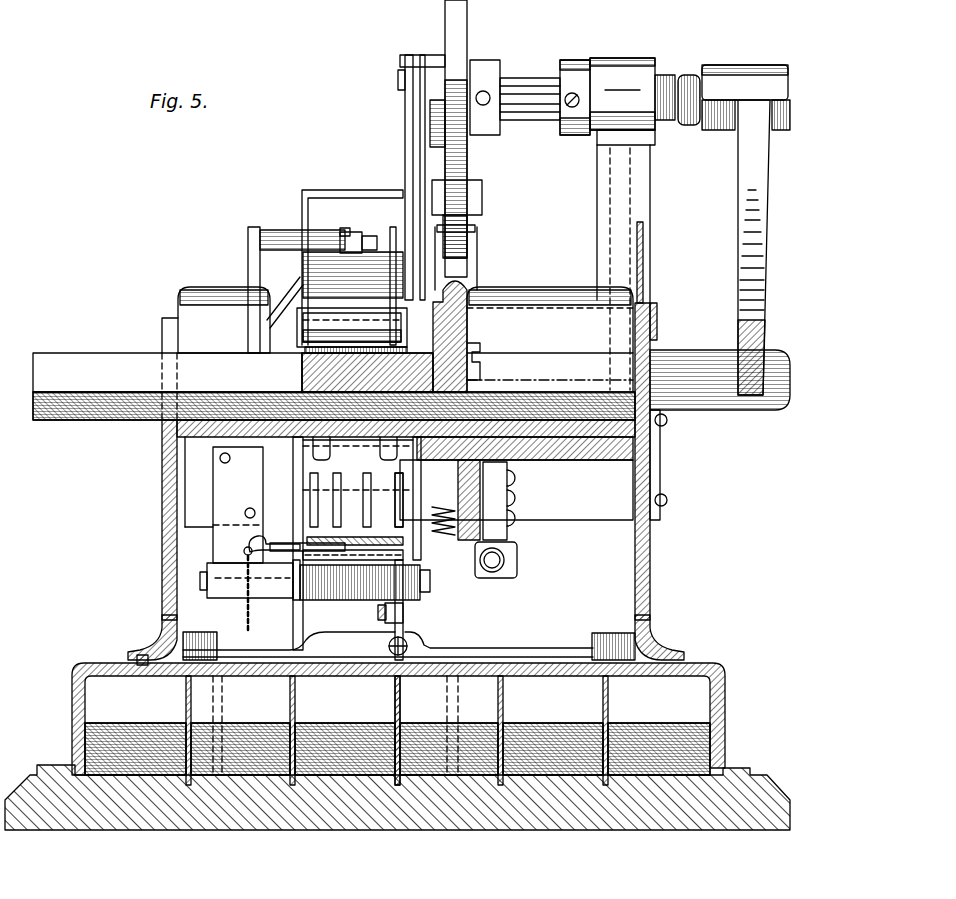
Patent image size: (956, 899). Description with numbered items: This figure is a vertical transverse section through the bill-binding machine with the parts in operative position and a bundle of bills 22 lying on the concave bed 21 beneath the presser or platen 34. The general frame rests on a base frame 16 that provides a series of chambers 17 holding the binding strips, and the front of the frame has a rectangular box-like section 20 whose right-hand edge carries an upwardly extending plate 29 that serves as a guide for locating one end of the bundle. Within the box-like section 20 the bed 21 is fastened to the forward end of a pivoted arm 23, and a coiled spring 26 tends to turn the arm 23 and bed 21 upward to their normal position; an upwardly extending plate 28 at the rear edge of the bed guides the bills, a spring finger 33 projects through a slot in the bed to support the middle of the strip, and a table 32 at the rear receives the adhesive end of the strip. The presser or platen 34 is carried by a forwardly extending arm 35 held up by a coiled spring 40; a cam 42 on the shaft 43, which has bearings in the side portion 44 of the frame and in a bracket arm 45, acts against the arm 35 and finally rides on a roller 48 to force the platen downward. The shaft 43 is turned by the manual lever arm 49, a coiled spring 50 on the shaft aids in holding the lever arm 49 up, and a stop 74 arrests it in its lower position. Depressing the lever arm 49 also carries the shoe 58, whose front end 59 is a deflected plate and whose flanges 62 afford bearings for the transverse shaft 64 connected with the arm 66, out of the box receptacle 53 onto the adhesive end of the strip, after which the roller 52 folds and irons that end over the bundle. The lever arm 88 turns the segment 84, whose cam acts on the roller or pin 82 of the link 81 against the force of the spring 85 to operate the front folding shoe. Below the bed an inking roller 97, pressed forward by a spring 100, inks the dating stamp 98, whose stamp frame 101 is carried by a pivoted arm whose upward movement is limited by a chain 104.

The base frame 16 is at (404, 708).
The chambers 17 is at (392, 730).
The box-like section 20 is at (635, 602).
The bed 21 is at (177, 453).
The bundle of bills 22 is at (133, 382).
The arm 23 is at (512, 500).
The coiled spring 26 is at (506, 562).
The plate 28 is at (215, 288).
The plate 29 is at (643, 245).
The table 32 is at (268, 322).
The spring finger 33 is at (320, 440).
The presser or platen 34 is at (303, 376).
The arm 35 is at (467, 300).
The coiled spring 40 is at (445, 537).
The cam 42 is at (467, 22).
The shaft 43 is at (520, 80).
The side portion 44 is at (422, 55).
The bracket arm 45 is at (622, 62).
The roller 48 is at (461, 232).
The lever arm 49 is at (738, 170).
The coiled spring 50 is at (696, 80).
The roller 52 is at (318, 318).
The box receptacle 53 is at (340, 186).
The shoe 58 is at (389, 298).
The front end 59 is at (325, 268).
The flanges 62 is at (345, 232).
The transverse shaft 64 is at (283, 212).
The arm 66 is at (248, 244).
The stop 74 is at (766, 410).
The link 81 is at (388, 644).
The roller or pin 82 is at (405, 612).
The segment 84 is at (410, 644).
The spring 85 is at (393, 680).
The lever arm 88 is at (405, 121).
The inking roller 97 is at (297, 485).
The dating stamp 98 is at (400, 480).
The spring 100 is at (405, 582).
The stamp frame 101 is at (357, 548).
The chain 104 is at (246, 613).